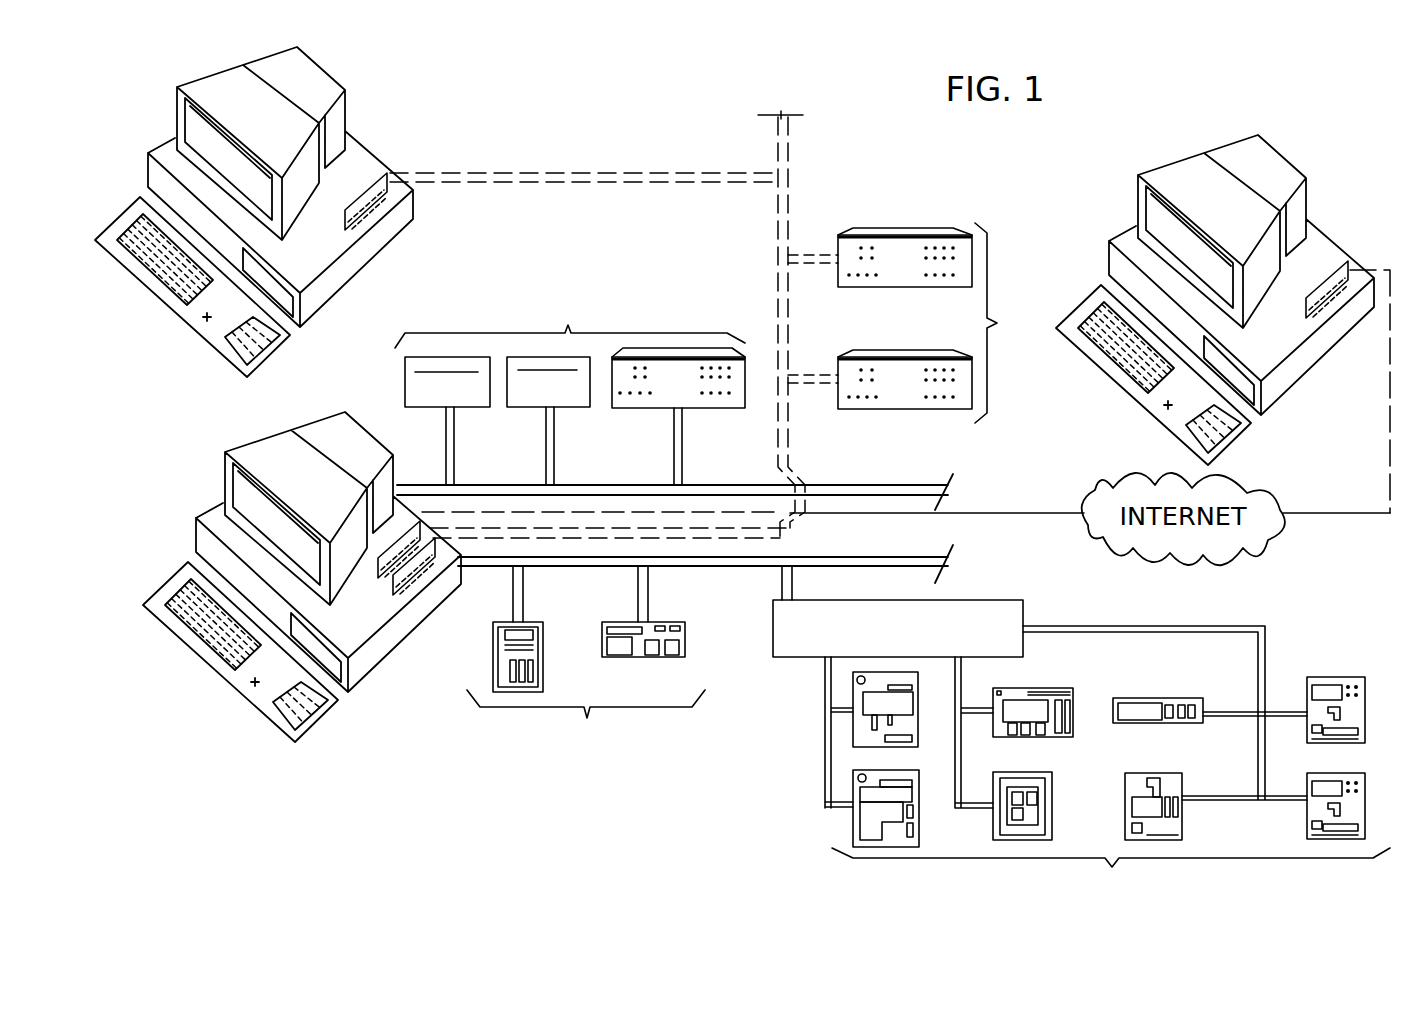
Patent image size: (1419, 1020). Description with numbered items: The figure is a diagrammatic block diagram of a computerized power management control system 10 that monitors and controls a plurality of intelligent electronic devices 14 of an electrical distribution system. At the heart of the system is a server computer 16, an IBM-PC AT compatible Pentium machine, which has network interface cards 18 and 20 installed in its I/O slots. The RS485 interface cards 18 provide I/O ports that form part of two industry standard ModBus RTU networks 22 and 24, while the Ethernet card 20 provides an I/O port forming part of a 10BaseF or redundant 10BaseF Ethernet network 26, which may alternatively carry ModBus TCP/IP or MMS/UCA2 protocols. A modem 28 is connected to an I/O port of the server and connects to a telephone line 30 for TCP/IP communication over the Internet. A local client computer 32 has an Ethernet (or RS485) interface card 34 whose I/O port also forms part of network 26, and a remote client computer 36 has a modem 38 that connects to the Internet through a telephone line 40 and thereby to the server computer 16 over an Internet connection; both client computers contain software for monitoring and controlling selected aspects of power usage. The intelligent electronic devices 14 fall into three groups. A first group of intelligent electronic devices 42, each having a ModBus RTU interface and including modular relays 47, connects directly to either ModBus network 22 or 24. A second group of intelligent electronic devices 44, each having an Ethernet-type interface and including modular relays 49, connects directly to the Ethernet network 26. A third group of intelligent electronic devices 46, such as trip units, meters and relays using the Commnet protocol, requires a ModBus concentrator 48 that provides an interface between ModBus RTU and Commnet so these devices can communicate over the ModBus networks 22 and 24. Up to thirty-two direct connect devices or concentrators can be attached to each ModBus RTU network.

The computerized power management control system 10 is at (229, 841).
The intelligent electronic devices 14 is at (431, 812).
The server computer 16 is at (208, 445).
The RS485 network interface cards 18 is at (398, 480).
The Ethernet network interface card 20 is at (418, 565).
The ModBus RTU network 22 is at (483, 485).
The ModBus RTU network 24 is at (495, 568).
The Ethernet network 26 is at (598, 185).
The modem 28 is at (407, 533).
The telephone line 30 is at (525, 510).
The local client computer 32 is at (152, 122).
The Ethernet interface card 34 is at (373, 200).
The remote client computer 36 is at (1074, 202).
The modem 38 is at (1357, 260).
The telephone line 40 is at (1352, 513).
The first group of intelligent electronic devices 42 is at (570, 524).
The second group of intelligent electronic devices 44 is at (1005, 323).
The third group of intelligent electronic devices 46 is at (1107, 758).
The modular relays 47 is at (715, 410).
The ModBus concentrator 48 is at (992, 598).
The modular relays 49 is at (885, 228).